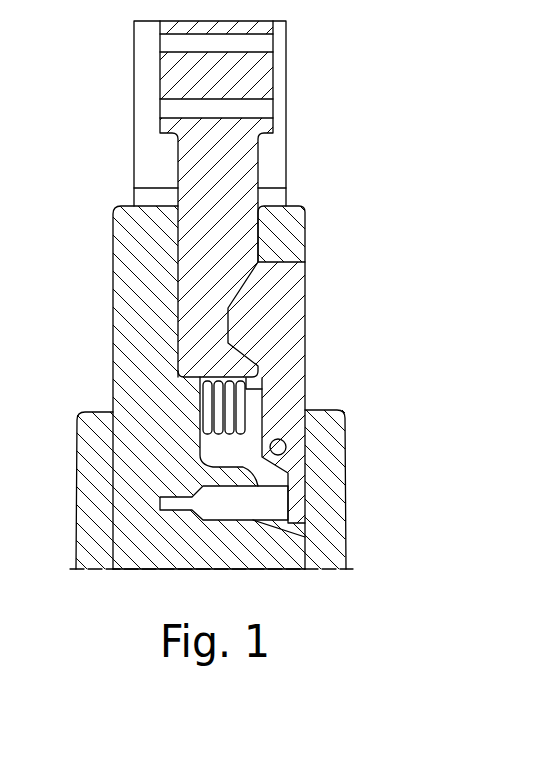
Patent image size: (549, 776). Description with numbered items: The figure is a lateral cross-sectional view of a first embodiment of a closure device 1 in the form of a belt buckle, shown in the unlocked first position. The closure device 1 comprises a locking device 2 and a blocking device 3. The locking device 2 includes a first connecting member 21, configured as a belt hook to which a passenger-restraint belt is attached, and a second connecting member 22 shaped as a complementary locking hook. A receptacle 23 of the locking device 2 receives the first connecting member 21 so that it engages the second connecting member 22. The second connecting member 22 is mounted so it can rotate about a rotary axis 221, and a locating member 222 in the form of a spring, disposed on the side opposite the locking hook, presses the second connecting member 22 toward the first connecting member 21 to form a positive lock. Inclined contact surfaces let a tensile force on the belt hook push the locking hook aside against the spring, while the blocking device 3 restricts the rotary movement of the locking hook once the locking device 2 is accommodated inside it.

The closure device 1 is at (191, 567).
The locking device 2 is at (113, 263).
The first connecting member 21 is at (259, 148).
The second connecting member 22 is at (278, 387).
The rotary axis 221 is at (286, 447).
The locating member 222 is at (278, 500).
The receptacle 23 is at (270, 233).
The blocking device 3 is at (323, 550).